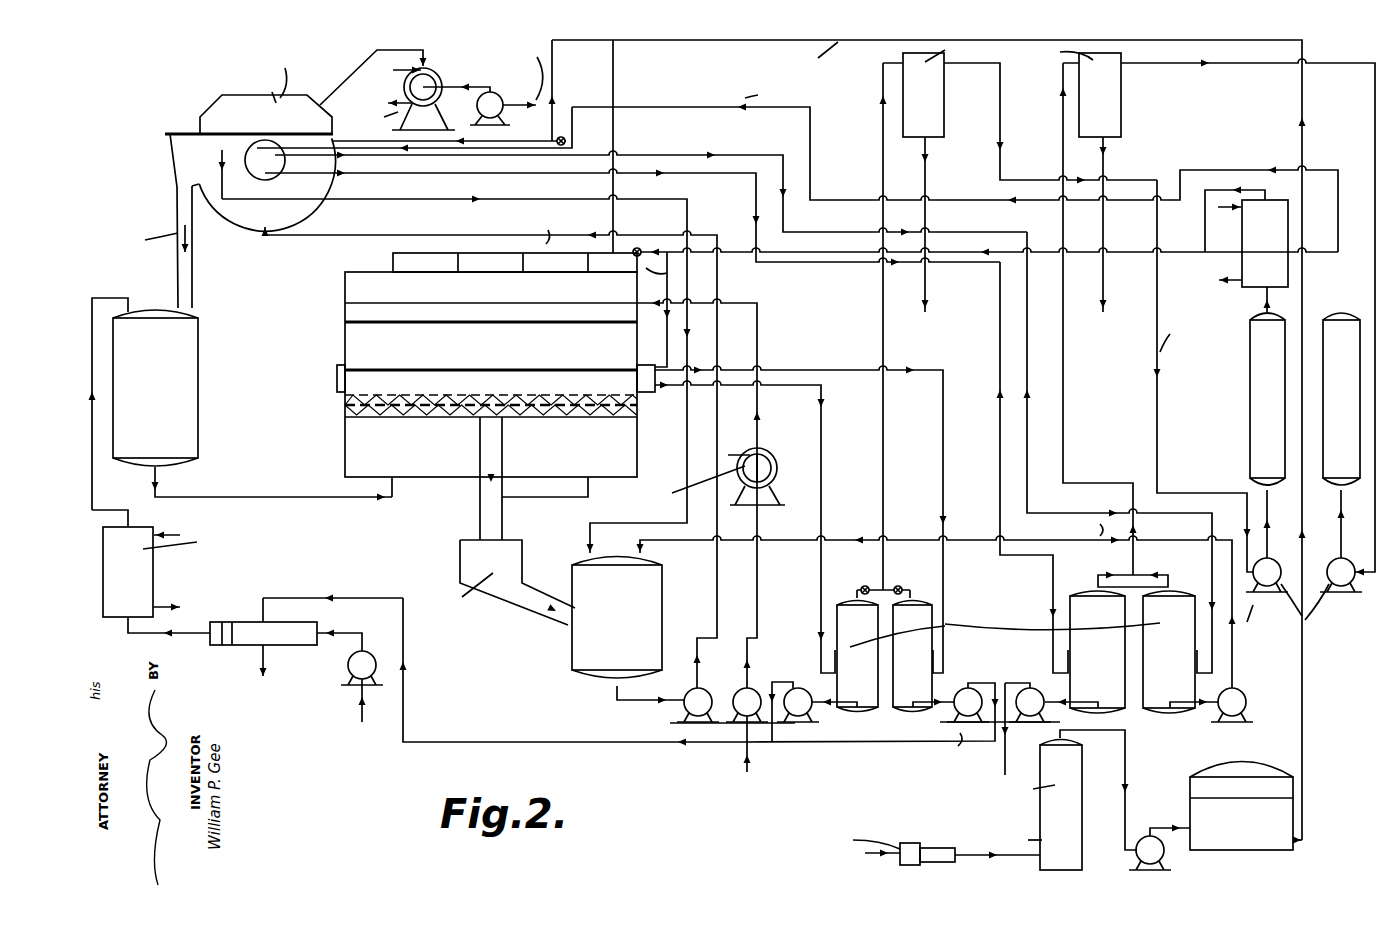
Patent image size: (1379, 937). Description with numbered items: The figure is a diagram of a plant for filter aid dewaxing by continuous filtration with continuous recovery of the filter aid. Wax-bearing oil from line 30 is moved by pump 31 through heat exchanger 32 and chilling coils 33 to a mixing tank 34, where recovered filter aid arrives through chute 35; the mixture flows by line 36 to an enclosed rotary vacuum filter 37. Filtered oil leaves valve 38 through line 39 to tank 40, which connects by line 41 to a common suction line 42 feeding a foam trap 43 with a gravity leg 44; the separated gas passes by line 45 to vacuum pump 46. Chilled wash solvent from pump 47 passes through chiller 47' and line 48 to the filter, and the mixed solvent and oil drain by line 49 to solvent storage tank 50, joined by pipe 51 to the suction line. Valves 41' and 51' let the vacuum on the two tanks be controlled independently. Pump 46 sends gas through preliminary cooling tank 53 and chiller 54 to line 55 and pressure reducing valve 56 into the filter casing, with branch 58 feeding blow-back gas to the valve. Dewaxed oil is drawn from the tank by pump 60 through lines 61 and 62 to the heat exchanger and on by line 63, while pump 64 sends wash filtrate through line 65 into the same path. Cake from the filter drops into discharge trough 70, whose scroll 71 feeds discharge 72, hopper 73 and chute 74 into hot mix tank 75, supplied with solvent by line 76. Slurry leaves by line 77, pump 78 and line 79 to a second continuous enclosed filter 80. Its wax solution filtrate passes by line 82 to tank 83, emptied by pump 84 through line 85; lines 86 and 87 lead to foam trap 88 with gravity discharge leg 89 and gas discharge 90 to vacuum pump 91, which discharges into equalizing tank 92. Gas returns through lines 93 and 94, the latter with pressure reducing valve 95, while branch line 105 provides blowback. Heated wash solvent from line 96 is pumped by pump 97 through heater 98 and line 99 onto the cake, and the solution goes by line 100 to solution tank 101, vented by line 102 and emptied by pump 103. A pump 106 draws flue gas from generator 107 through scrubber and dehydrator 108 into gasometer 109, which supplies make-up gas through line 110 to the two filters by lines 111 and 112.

The line 30 is at (361, 716).
The pump 31 is at (348, 668).
The heat exchanger 32 is at (248, 627).
The chilling coils 33 is at (153, 559).
The mixing tank 34 is at (198, 374).
The chute 35 is at (192, 289).
The line 36 is at (307, 500).
The enclosed rotary vacuum filter 37 is at (345, 341).
The valve 38 is at (640, 394).
The line 39 is at (822, 462).
The tank 40 is at (998, 656).
The line 41 is at (861, 572).
The valve 41' is at (849, 581).
The common suction line 42 is at (884, 485).
The foam trap 43 is at (944, 105).
The gravity leg 44 is at (926, 291).
The line 45 is at (1000, 126).
The vacuum pump 46 is at (1274, 590).
The pump 47 is at (742, 715).
The chiller 47' is at (695, 465).
The line 48 is at (758, 331).
The line 49 is at (820, 369).
The solvent storage tank 50 is at (923, 656).
The pipe 51 is at (901, 572).
The valve 51' is at (916, 581).
The preliminary cooling tank 53 is at (1250, 386).
The chiller 54 is at (1242, 258).
The line 55 is at (1177, 251).
The pressure reducing valve 56 is at (640, 248).
The branch 58 is at (667, 335).
The pump 60 is at (798, 690).
The line 61 is at (772, 680).
The line 62 is at (579, 746).
The line 63 is at (262, 669).
The pump 64 is at (962, 690).
The line 65 is at (891, 745).
The discharge trough 70 is at (538, 398).
The scroll 71 is at (411, 401).
The discharge 72 is at (497, 446).
The hopper 73 is at (515, 549).
The chute 74 is at (505, 607).
The hot mix tank 75 is at (662, 593).
The line 76 is at (936, 599).
The line 77 is at (658, 703).
The pump 78 is at (687, 695).
The line 79 is at (716, 613).
The continuous enclosed filter 80 is at (258, 100).
The line 82 is at (1015, 572).
The tank 83 is at (1097, 652).
The pump 84 is at (1034, 689).
The line 85 is at (1003, 761).
The line 86 is at (1106, 574).
The common suction line 87 is at (1064, 406).
The foam trap 88 is at (1121, 105).
The gravity discharge leg 89 is at (1103, 274).
The gas discharge 90 is at (1230, 65).
The vacuum pump 91 is at (1333, 589).
The equalizing tank 92 is at (1344, 318).
The line 93 is at (712, 107).
The line 94 is at (530, 138).
The pressure reducing valve 95 is at (565, 137).
The line 96 is at (503, 103).
The pump 97 is at (492, 94).
The heater 98 is at (432, 78).
The line 99 is at (370, 65).
The line 100 is at (661, 153).
The solution tank 101 is at (1180, 652).
The line 102 is at (1157, 574).
The pump 103 is at (1242, 698).
The branch line 105 is at (293, 148).
The pump 106 is at (1146, 839).
The generator 107 is at (932, 847).
The scrubber and dehydrator 108 is at (1040, 798).
The gasometer 109 is at (1200, 784).
The line 110 is at (1304, 654).
The line 111 is at (614, 71).
The line 112 is at (560, 74).